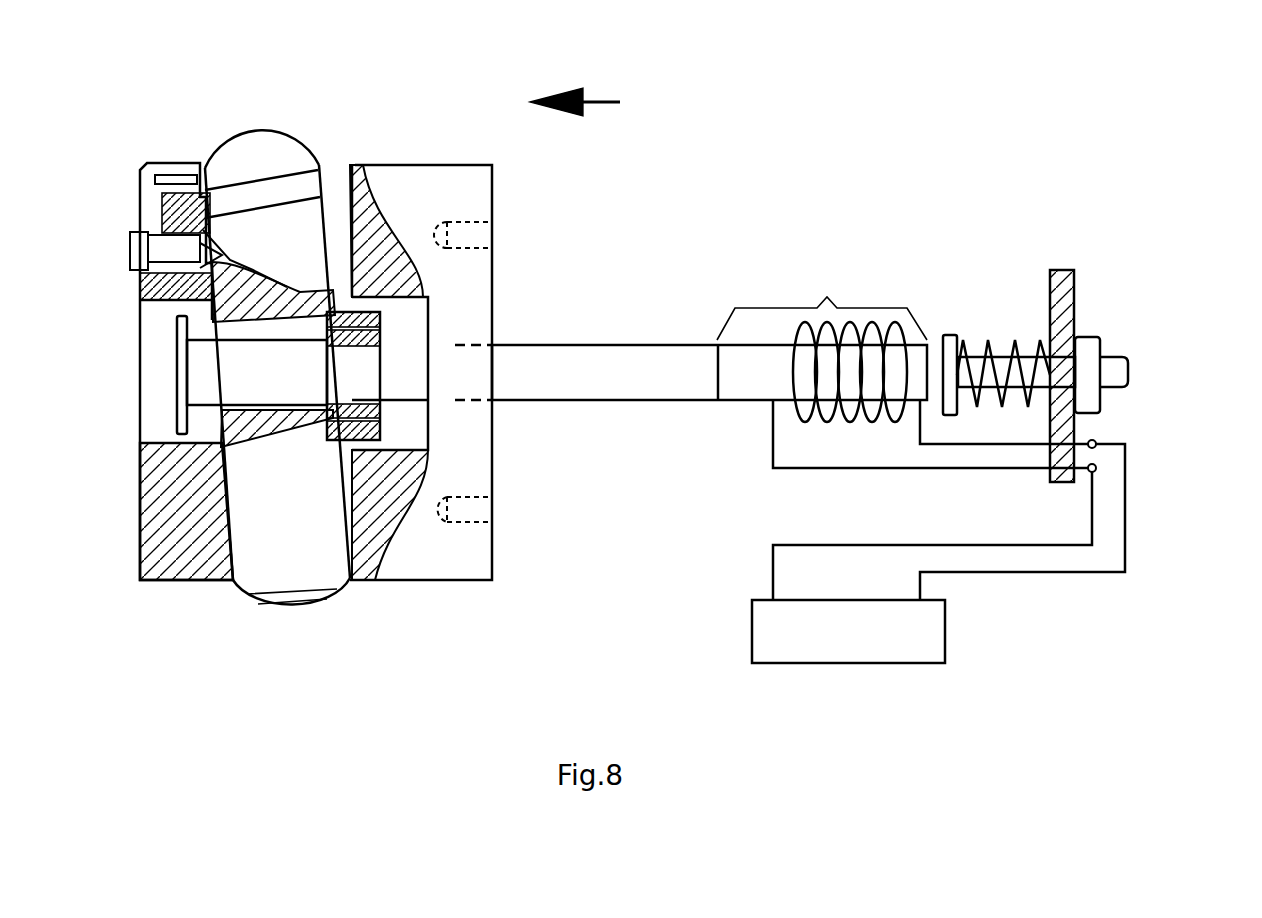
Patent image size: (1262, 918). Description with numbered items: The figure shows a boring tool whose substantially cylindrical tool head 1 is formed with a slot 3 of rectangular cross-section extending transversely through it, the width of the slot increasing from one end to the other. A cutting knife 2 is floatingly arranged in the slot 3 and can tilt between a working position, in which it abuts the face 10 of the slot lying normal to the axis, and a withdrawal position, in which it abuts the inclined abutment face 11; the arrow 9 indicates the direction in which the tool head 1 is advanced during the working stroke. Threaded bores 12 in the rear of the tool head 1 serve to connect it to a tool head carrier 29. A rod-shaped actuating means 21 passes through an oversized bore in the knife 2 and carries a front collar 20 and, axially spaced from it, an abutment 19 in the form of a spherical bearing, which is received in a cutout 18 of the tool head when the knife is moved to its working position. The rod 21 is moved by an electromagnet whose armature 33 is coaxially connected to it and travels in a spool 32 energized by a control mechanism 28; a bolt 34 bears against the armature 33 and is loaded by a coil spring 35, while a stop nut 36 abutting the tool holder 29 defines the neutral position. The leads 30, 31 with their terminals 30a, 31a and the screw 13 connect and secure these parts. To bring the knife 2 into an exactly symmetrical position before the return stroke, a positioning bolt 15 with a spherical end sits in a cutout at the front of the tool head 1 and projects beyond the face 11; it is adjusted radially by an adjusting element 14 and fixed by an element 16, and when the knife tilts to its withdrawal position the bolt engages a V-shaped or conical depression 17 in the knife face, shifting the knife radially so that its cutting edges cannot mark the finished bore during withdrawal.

The tool head 1 is at (420, 195).
The cutting knife 2 is at (283, 222).
The slot 3 is at (337, 280).
The arrow 9 is at (597, 103).
The face of the slot 10 is at (350, 258).
The abutment face 11 is at (230, 510).
The threaded bores 12 is at (480, 505).
The screw 13 is at (183, 175).
The adjusting element 14 is at (163, 216).
The positioning bolt 15 is at (170, 285).
The fixing element 16 is at (128, 246).
The depression 17 is at (210, 245).
The cutout 18 is at (405, 410).
The abutment 19 is at (357, 440).
The collar 20 is at (182, 415).
The rod-shaped actuating means 21 is at (668, 370).
The control mechanism 28 is at (918, 620).
The tool head carrier 29 is at (1062, 295).
The lead 30 is at (1125, 555).
The terminal 30a is at (1097, 444).
The lead 31 is at (1092, 492).
The terminal 31a is at (1097, 467).
The spool 32 is at (863, 328).
The armature 33 is at (822, 297).
The bolt 34 is at (948, 355).
The coil spring 35 is at (1013, 342).
The stop nut 36 is at (1085, 350).